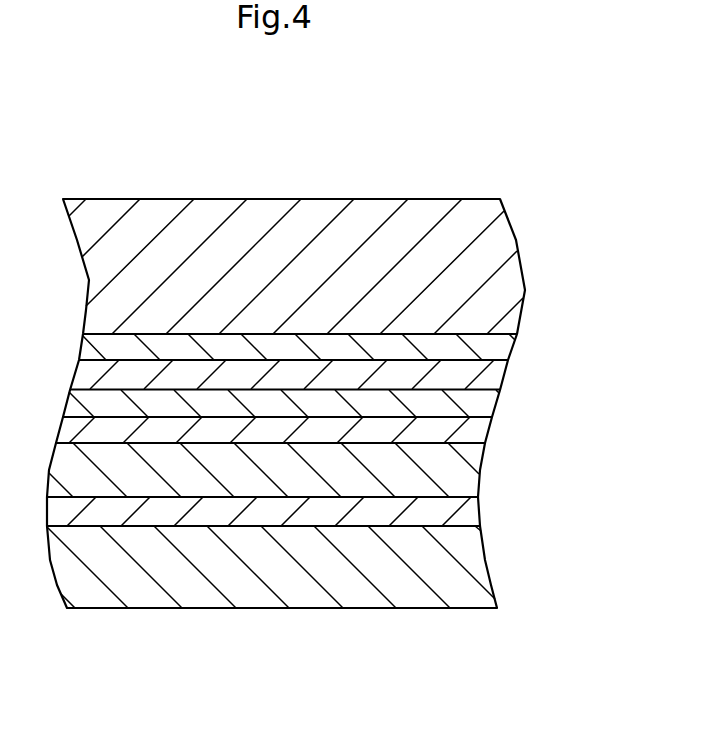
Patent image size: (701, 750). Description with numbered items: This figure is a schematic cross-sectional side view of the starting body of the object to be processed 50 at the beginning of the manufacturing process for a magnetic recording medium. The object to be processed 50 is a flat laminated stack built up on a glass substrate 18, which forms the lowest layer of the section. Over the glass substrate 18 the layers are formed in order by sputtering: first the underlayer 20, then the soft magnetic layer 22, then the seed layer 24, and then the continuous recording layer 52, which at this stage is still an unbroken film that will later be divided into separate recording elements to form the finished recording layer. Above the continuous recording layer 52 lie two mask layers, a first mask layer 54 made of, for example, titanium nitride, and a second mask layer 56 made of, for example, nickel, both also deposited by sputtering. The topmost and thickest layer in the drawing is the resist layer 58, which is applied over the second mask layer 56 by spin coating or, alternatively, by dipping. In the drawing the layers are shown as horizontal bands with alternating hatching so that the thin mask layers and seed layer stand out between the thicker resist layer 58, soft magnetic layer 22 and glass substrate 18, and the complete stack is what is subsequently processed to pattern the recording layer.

The object to be processed 50 is at (323, 153).
The resist layer 58 is at (523, 257).
The second mask layer 56 is at (517, 345).
The first mask layer 54 is at (508, 375).
The continuous recording layer 52 is at (497, 403).
The seed layer 24 is at (490, 430).
The soft magnetic layer 22 is at (482, 473).
The underlayer 20 is at (480, 513).
The glass substrate 18 is at (482, 553).